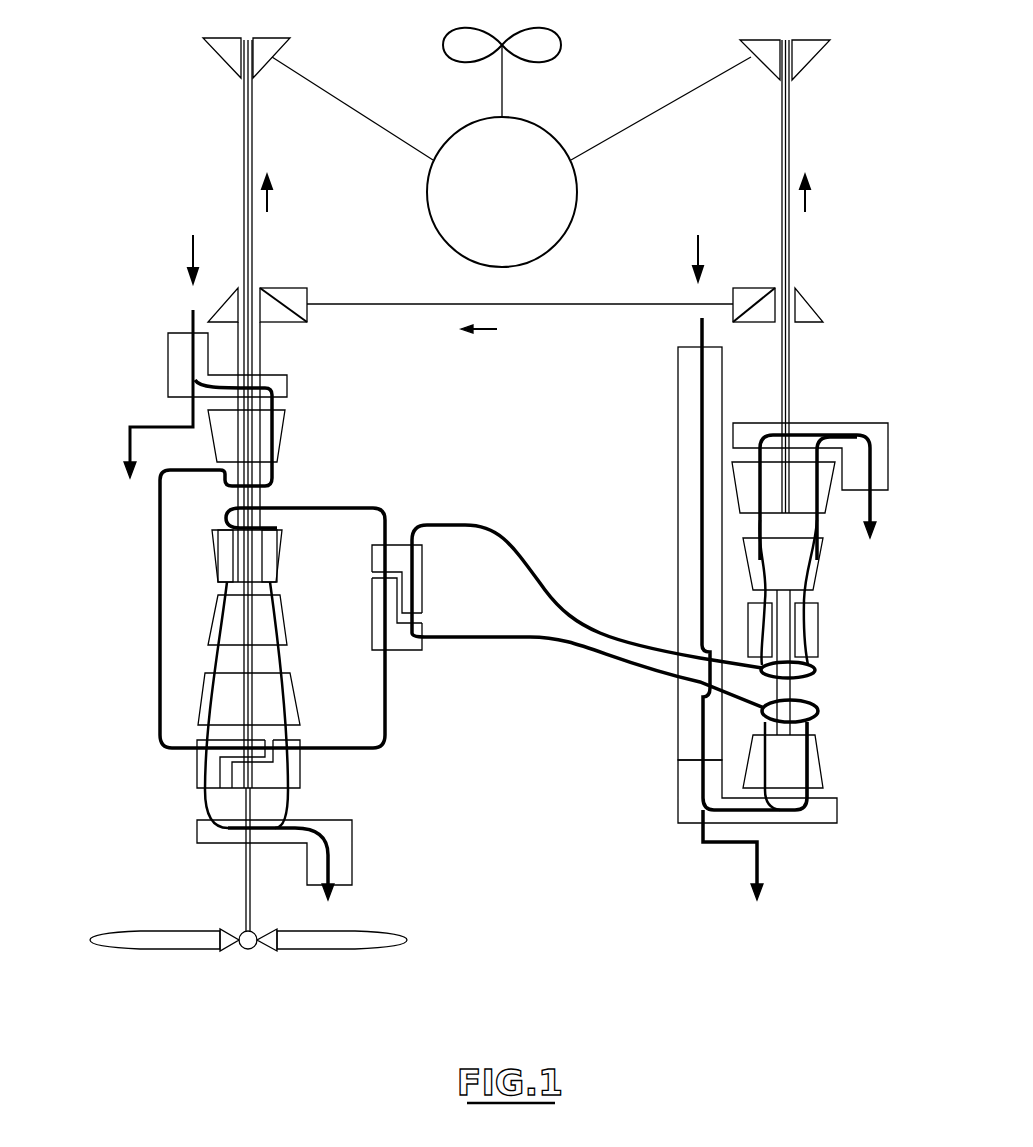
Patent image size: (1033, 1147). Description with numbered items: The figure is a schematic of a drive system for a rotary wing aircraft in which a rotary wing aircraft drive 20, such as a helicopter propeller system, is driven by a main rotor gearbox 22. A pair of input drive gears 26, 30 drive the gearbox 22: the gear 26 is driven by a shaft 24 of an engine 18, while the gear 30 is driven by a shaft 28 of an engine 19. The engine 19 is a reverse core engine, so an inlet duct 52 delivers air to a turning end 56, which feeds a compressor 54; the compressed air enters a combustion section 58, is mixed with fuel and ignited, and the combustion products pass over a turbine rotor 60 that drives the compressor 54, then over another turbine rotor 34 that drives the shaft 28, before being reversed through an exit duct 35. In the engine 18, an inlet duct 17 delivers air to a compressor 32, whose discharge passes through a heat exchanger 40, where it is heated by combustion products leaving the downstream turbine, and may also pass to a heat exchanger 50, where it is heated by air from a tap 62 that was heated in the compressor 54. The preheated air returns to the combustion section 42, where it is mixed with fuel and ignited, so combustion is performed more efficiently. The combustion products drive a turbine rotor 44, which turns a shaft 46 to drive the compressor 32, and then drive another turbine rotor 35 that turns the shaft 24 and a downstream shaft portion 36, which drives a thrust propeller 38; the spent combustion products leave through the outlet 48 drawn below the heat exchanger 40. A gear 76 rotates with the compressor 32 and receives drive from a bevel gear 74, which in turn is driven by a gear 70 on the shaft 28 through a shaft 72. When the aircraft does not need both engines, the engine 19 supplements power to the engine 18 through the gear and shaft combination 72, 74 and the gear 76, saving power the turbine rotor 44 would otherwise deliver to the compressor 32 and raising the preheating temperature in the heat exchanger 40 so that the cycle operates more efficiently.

The inlet duct 17 is at (172, 360).
The engine 18 is at (85, 435).
The engine 19 is at (886, 250).
The rotary wing aircraft drive 20 is at (470, 42).
The main rotor gearbox 22 is at (545, 128).
The shaft 24 is at (243, 103).
The input drive gear 26 is at (222, 56).
The shaft 28 is at (790, 146).
The input drive gear 30 is at (822, 55).
The compressor 32 is at (222, 437).
The turbine rotor 34 is at (803, 478).
The turbine rotor 35 is at (290, 695).
The downstream shaft portion 36 is at (244, 860).
The thrust propeller 38 is at (125, 942).
The heat exchanger 40 is at (200, 770).
The combustion section 42 is at (276, 580).
The turbine rotor 44 is at (220, 627).
The shaft 46 is at (262, 500).
The exhaust duct 48 is at (345, 843).
The heat exchanger 50 is at (396, 555).
The inlet duct 52 is at (678, 400).
The compressor 54 is at (818, 778).
The turning end 56 is at (690, 808).
The combustion section 58 is at (815, 645).
The turbine rotor 60 is at (752, 566).
The tap 62 is at (568, 642).
The gear 70 is at (802, 300).
The shaft 72 is at (593, 306).
The bevel gear 74 is at (290, 298).
The gear 76 is at (270, 318).